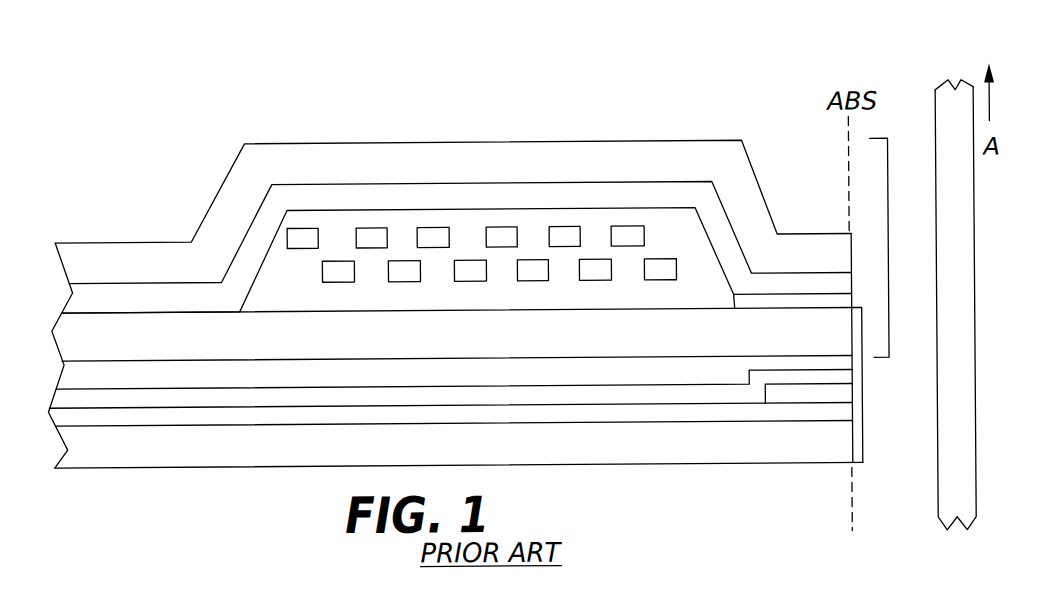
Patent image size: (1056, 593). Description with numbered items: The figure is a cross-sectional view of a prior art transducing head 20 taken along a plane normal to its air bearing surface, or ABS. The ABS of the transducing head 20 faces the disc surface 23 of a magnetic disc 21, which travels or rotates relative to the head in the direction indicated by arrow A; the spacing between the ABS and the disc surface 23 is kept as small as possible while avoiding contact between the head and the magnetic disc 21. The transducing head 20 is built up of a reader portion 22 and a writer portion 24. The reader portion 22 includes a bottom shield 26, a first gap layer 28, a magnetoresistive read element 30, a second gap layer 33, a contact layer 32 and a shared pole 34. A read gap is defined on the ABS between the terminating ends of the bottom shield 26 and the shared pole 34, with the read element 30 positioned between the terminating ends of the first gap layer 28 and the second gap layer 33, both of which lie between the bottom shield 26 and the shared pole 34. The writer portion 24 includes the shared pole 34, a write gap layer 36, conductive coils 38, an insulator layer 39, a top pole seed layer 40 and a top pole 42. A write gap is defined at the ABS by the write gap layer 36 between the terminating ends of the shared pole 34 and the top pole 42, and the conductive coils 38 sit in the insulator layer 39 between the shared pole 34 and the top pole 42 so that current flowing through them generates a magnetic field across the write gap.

The transducing head 20 is at (171, 214).
The magnetic disc 21 is at (965, 106).
The reader portion 22 is at (862, 435).
The disc surface 23 is at (937, 121).
The writer portion 24 is at (891, 235).
The bottom shield 26 is at (846, 458).
The first gap layer 28 is at (822, 412).
The magnetoresistive (MR) read element 30 is at (802, 394).
The contact layer 32 is at (753, 390).
The second gap layer 33 is at (711, 375).
The shared pole 34 is at (820, 347).
The write gap layer 36 is at (843, 302).
The conductive coils 38 is at (564, 230).
The insulator layer 39 is at (516, 303).
The top pole seed layer 40 is at (835, 285).
The top pole 42 is at (816, 267).